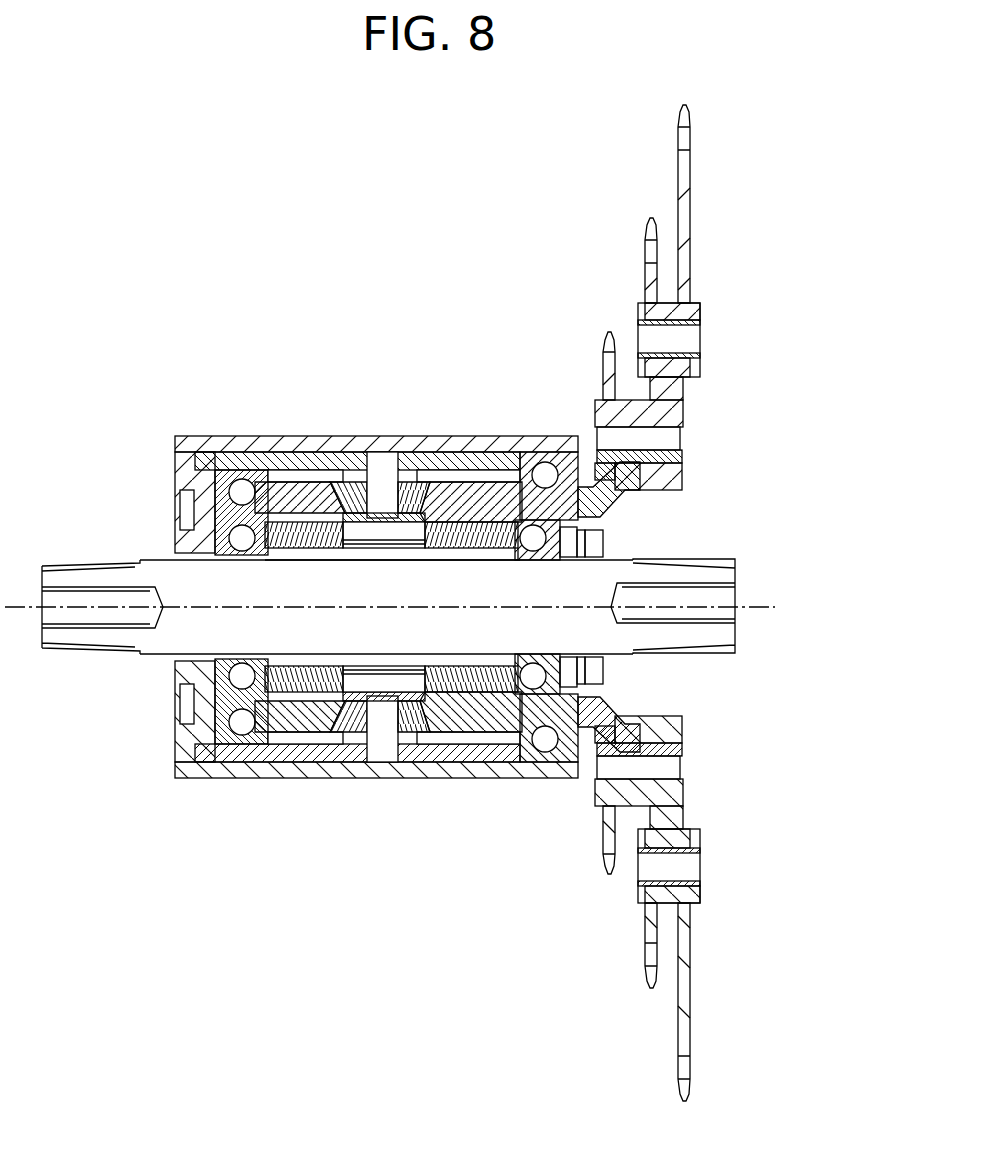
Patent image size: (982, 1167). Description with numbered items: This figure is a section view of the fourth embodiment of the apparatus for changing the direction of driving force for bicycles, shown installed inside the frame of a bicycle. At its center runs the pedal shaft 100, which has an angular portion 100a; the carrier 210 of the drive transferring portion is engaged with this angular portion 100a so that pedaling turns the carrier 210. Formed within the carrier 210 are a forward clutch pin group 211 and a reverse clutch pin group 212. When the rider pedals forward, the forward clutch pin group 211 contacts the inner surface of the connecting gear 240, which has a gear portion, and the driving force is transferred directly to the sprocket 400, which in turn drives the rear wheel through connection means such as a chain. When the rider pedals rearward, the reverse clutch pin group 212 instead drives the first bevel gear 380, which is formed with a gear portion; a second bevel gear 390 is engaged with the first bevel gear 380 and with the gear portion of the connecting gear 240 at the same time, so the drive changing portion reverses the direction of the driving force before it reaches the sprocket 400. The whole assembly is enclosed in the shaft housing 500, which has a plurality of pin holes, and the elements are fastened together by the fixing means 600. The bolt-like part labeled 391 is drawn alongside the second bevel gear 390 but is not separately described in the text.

The pedal shaft 100 is at (165, 570).
The angular portion 100a is at (383, 548).
The carrier 210 is at (385, 698).
The forward clutch pin group 211 is at (468, 682).
The reverse clutch pin group 212 is at (313, 737).
The connecting gear 240 is at (478, 492).
The first bevel gear 380 is at (287, 490).
The second bevel gear 390 is at (355, 497).
The bolt 391 is at (386, 456).
The sprocket 400 is at (714, 426).
The shaft housing 500 is at (230, 442).
The fixing means 600 is at (615, 677).